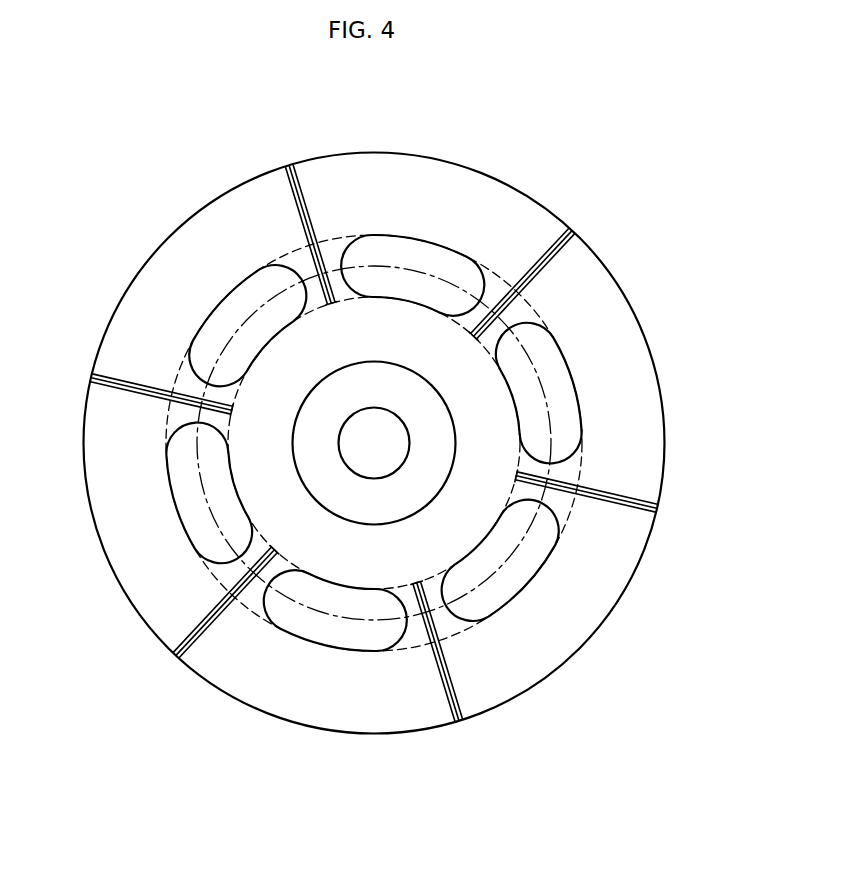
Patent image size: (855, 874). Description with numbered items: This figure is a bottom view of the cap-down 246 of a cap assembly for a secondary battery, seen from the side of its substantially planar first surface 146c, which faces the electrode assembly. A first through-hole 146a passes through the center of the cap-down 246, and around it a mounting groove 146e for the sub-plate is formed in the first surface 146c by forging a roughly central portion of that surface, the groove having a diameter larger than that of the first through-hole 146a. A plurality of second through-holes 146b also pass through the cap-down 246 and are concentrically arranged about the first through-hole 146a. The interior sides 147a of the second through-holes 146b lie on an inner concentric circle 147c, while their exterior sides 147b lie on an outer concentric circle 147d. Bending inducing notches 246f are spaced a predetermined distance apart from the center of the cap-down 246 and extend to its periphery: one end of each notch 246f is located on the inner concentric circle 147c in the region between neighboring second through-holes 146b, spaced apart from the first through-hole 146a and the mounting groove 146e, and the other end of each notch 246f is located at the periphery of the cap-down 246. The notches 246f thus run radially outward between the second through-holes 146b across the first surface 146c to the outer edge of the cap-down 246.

The cap-down 246 is at (105, 192).
The bending inducing notches 246f is at (540, 278).
The first through-hole 146a is at (394, 435).
The second through-holes 146b is at (641, 378).
The first surface 146c is at (547, 657).
The mounting groove 146e is at (358, 502).
The interior sides 147a is at (505, 375).
The exterior sides 147b is at (575, 396).
The inner concentric circle 147c is at (517, 467).
The outer concentric circle 147d is at (567, 520).